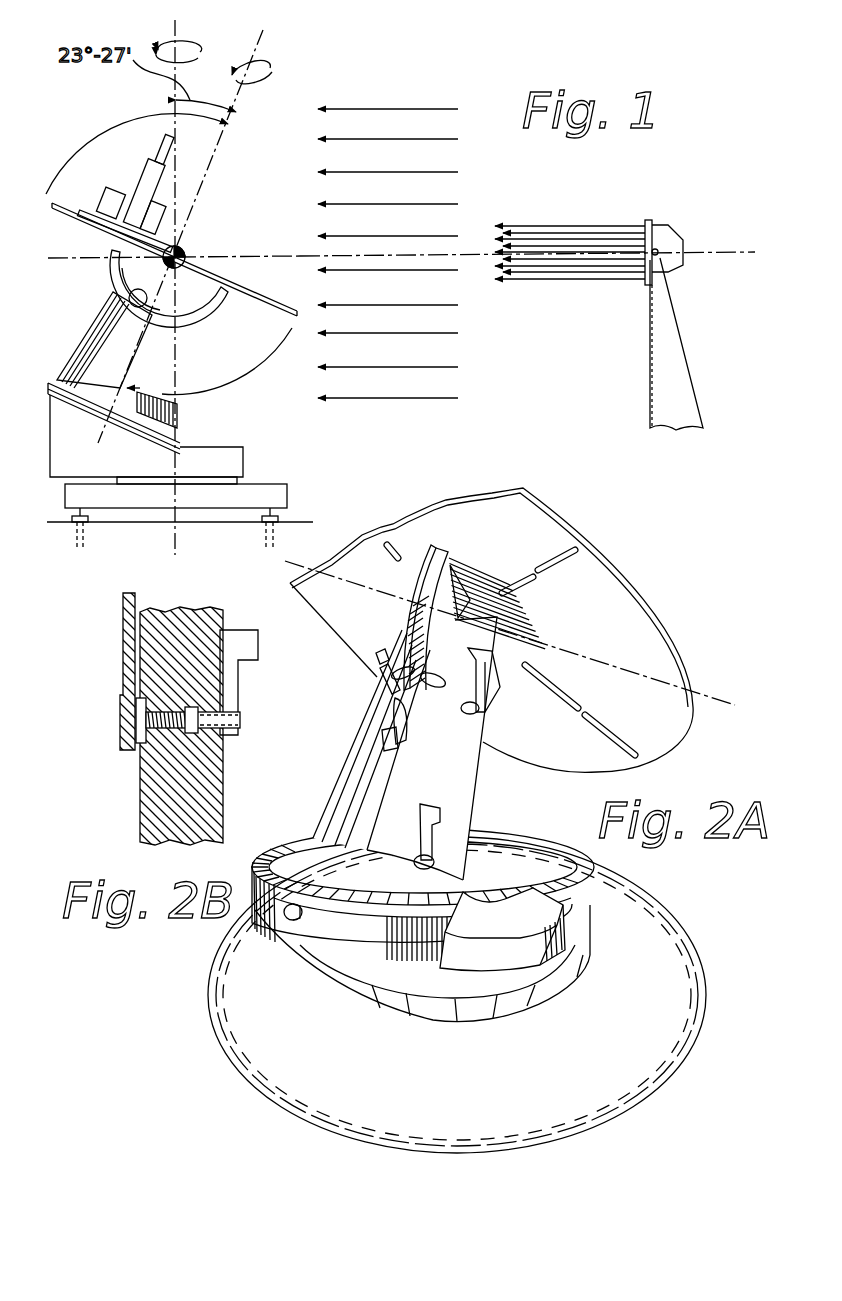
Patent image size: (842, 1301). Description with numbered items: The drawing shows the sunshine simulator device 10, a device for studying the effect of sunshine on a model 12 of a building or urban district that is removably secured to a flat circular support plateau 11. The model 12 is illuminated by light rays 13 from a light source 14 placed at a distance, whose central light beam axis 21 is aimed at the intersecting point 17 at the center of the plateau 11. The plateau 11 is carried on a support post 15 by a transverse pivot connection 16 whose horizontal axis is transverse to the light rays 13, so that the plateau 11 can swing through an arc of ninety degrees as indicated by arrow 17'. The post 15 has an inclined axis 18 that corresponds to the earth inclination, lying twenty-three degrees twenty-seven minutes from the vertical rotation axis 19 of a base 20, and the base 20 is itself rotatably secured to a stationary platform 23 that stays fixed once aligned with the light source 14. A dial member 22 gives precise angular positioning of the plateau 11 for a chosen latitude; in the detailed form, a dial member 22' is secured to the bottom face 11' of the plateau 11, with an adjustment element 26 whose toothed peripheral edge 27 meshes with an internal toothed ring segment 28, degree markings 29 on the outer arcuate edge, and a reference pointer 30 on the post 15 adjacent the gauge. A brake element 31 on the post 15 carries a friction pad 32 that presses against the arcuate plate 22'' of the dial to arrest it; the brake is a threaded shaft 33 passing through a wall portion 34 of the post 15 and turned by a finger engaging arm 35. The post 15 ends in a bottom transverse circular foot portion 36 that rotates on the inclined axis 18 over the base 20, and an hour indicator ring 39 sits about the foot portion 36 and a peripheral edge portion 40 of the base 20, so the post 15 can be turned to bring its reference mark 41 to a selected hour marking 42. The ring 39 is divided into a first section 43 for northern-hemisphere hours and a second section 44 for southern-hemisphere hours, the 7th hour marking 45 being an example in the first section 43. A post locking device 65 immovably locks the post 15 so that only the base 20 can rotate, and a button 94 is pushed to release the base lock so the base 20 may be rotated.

In FIG. 1, the sunshine simulator device 10 is at (272, 118).
In FIG. 1, the support plateau 11 is at (173, 259).
In FIG. 2A, the bottom face of the support plateau 11' is at (491, 629).
In FIG. 1, the model 12 is at (136, 157).
In FIG. 1, the light rays 13 is at (445, 205).
In FIG. 1, the light source 14 is at (651, 220).
In FIG. 1, the support post 15 is at (88, 348).
In FIG. 2A, the support post 15 is at (390, 773).
In FIG. 1, the transverse pivot connection 16 is at (186, 250).
In FIG. 2A, the transverse pivot connection 16 is at (465, 616).
In FIG. 1, the intersecting point 17 is at (192, 195).
In FIG. 1, the arrow 17' is at (169, 239).
In FIG. 1, the inclined axis 18 is at (268, 38).
In FIG. 1, the rotation axis 19 is at (178, 27).
In FIG. 1, the base 20 is at (105, 455).
In FIG. 2A, the base 20 is at (261, 874).
In FIG. 1, the central light beam axis 21 is at (727, 257).
In FIG. 1, the dial member 22 is at (169, 299).
In FIG. 2A, the dial member 22' is at (394, 617).
In FIG. 2A, the arcuate plate 22'' is at (415, 591).
In FIG. 1, the stationary platform 23 is at (288, 492).
In FIG. 2A, the adjustment element 26 is at (393, 707).
In FIG. 2A, the toothed peripheral edge 27 is at (392, 733).
In FIG. 2A, the internal toothed ring segment 28 is at (403, 638).
In FIG. 2A, the degree markings 29 is at (413, 645).
In FIG. 2A, the reference pointer 30 is at (440, 669).
In FIG. 2A, the brake element 31 is at (465, 714).
In FIG. 2B, the friction pad 32 is at (133, 735).
In FIG. 2B, the threaded shaft 33 is at (222, 735).
In FIG. 2B, the wall portion 34 is at (198, 790).
In FIG. 2B, the finger engaging arm 35 is at (250, 652).
In FIG. 2A, the bottom transverse circular foot portion 36 is at (467, 885).
In FIG. 2A, the hour indicator ring 39 is at (575, 905).
In FIG. 2A, the peripheral edge portion 40 is at (565, 880).
In FIG. 2A, the reference mark 41 is at (355, 860).
In FIG. 2A, the hour marking 42 is at (420, 897).
In FIG. 2A, the first section 43 is at (387, 893).
In FIG. 2A, the second section 44 is at (373, 893).
In FIG. 2A, the 7th hour marking 45 is at (362, 890).
In FIG. 2A, the post locking device 65 is at (416, 804).
In FIG. 2A, the button 94 is at (291, 921).